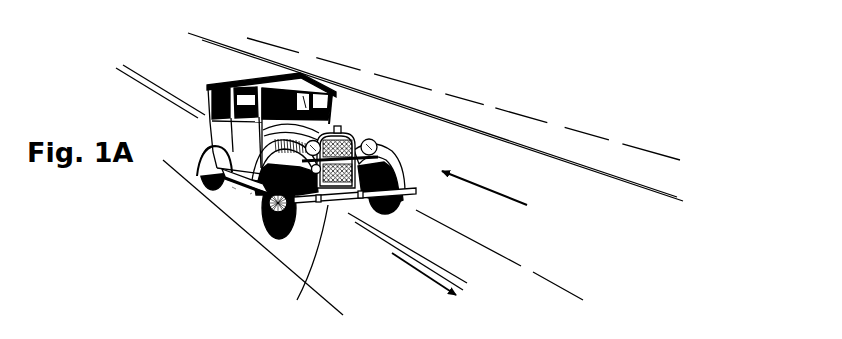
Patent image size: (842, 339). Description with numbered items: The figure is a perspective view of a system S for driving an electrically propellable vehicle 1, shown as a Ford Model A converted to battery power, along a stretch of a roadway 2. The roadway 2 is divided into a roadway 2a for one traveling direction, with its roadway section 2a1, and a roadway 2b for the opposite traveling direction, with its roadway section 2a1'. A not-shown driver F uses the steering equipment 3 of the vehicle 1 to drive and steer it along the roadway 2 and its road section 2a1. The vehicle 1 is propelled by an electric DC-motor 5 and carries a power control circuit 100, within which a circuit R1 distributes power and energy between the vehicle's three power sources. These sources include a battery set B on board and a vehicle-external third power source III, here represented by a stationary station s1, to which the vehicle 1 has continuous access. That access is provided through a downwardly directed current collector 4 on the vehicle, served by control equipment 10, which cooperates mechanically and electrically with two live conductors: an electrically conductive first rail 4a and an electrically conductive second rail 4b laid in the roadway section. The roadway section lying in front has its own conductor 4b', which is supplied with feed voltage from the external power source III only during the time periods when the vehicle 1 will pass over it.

The vehicle 1 is at (293, 127).
The stretch of a roadway 2 is at (346, 255).
The roadway in one traveling direction 2a is at (494, 323).
The roadway section in one traveling direction 2a1 is at (407, 261).
The roadway section in an opposite direction 2a1' is at (442, 120).
The roadway in an opposite traveling direction 2b is at (243, 55).
The steering equipment 3 is at (340, 106).
The vehicle related contact means as current remover 4 is at (298, 263).
The electrical conductive first rail 4a is at (650, 198).
The electrical conductive second rail 4b is at (645, 175).
The electric conductor of the roadway section in front 4b' is at (449, 259).
The vehicle related DC-motor 5 is at (353, 116).
The control equipment for contact means 10 is at (232, 187).
The power control circuit 100 is at (385, 224).
The energy distributing and three power sources controlling circuit R1 is at (526, 229).
The driver F is at (306, 103).
The vehicle and roadways related system S is at (489, 97).
The battery set B is at (250, 194).
The stationary station s1 is at (465, 280).
The third power source, vehicle external III is at (631, 268).